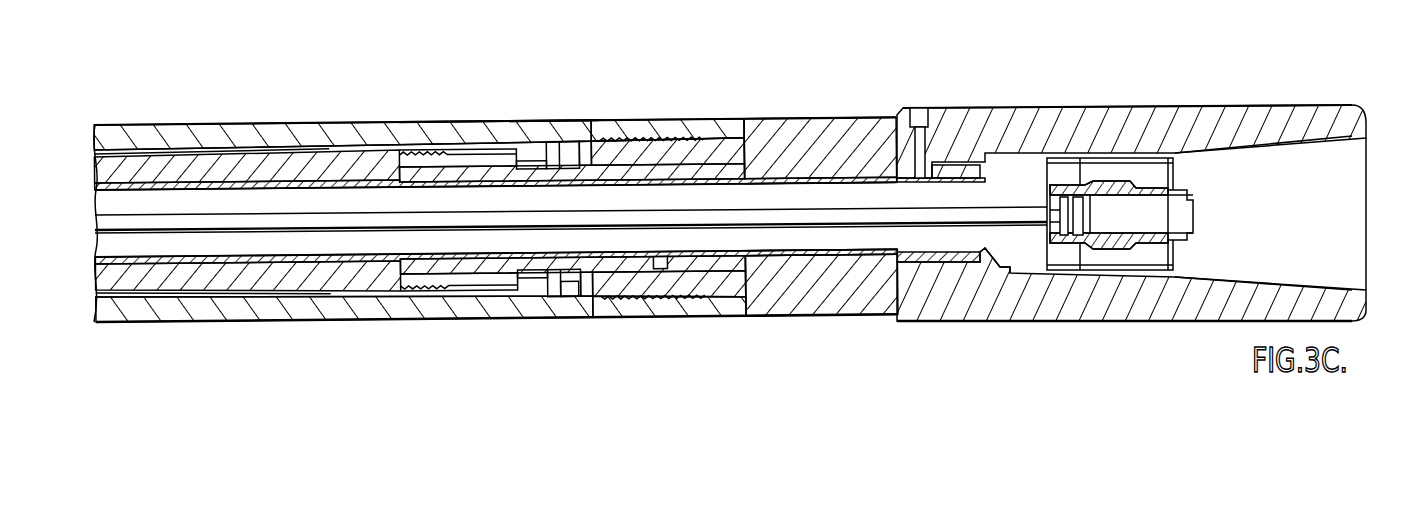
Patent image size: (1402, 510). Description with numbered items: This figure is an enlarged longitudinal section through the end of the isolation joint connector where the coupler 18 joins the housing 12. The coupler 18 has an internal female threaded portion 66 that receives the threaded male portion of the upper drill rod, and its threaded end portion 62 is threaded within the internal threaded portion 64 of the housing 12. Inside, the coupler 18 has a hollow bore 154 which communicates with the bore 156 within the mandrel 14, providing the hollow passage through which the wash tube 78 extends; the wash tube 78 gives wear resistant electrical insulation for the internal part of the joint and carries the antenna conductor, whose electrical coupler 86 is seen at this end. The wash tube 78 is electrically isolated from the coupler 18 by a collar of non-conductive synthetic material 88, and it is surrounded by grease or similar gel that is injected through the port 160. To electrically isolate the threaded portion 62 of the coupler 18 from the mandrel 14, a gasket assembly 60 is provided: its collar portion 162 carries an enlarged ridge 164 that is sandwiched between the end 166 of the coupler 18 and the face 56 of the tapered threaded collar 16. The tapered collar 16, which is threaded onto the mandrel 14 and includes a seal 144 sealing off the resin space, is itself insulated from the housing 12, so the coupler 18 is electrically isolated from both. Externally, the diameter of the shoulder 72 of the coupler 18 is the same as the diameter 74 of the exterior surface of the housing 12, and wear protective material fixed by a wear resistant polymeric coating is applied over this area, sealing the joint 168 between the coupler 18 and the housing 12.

The housing 12 is at (499, 115).
The mandrel 14 is at (180, 155).
The tapered threaded collar 16 is at (447, 153).
The coupler 18 is at (1156, 96).
The face of the tapered collar 56 is at (578, 293).
The gasket assembly 60 is at (606, 272).
The threaded end portion 62 is at (698, 140).
The internal threaded portion 64 is at (655, 125).
The internal female threaded portion 66 is at (1270, 152).
The shoulder 72 is at (780, 122).
The diameter of the exterior surface of the housing 74 is at (325, 122).
The wash tube 78 is at (818, 168).
The electrical coupler 86 is at (1189, 187).
The collar of non-conductive synthetic material 88 is at (987, 277).
The seal 144 is at (560, 146).
The hollow bore 154 is at (822, 272).
The bore 156 is at (232, 187).
The port 160 is at (920, 128).
The collar portion 162 is at (550, 272).
The enlarged ridge 164 is at (582, 158).
The end of the coupler 166 is at (583, 292).
The joint 168 is at (745, 320).